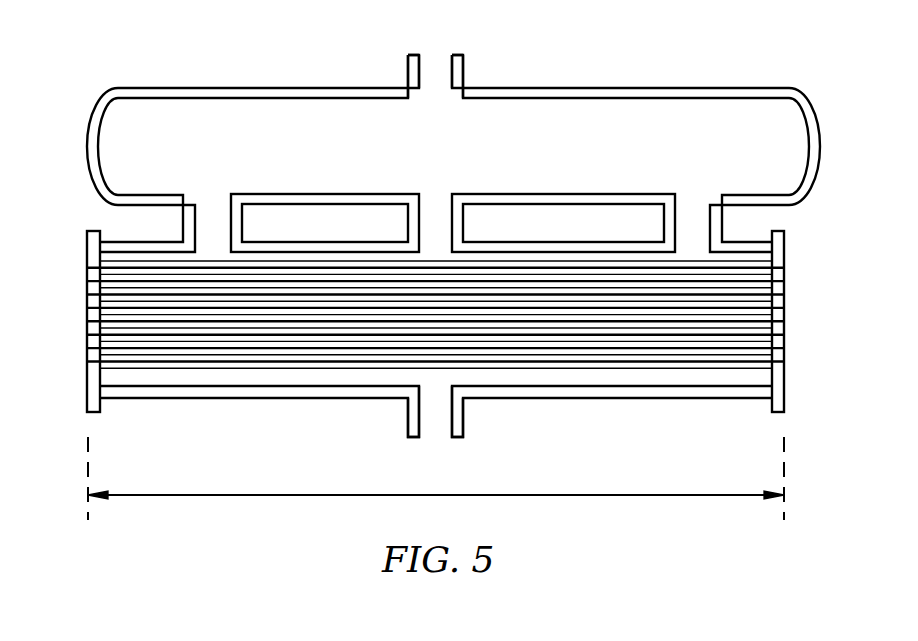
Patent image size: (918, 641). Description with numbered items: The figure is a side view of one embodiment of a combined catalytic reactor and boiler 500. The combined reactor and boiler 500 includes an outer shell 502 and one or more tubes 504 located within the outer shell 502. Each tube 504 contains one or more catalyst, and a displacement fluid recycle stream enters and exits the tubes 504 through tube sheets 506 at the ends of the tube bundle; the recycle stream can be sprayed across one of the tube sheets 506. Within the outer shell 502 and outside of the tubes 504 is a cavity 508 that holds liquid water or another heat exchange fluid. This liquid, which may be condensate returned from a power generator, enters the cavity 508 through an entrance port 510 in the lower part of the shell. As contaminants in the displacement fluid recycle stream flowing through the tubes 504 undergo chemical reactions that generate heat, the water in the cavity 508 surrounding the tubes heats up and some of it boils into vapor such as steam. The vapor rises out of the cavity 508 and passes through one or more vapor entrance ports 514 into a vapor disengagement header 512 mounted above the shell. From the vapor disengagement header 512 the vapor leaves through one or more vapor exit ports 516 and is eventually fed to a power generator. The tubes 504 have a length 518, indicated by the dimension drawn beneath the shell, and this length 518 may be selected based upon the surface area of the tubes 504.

The combined catalytic reactor and boiler 500 is at (185, 22).
The outer shell 502 is at (278, 392).
The tubes 504 is at (87, 318).
The tube sheets 506 is at (93, 412).
The cavity 508 is at (703, 378).
The entrance port 510 is at (465, 420).
The vapor disengagement header 512 is at (93, 116).
The vapor entrance ports 514 is at (228, 202).
The vapor exit ports 516 is at (466, 72).
The length 518 is at (495, 495).